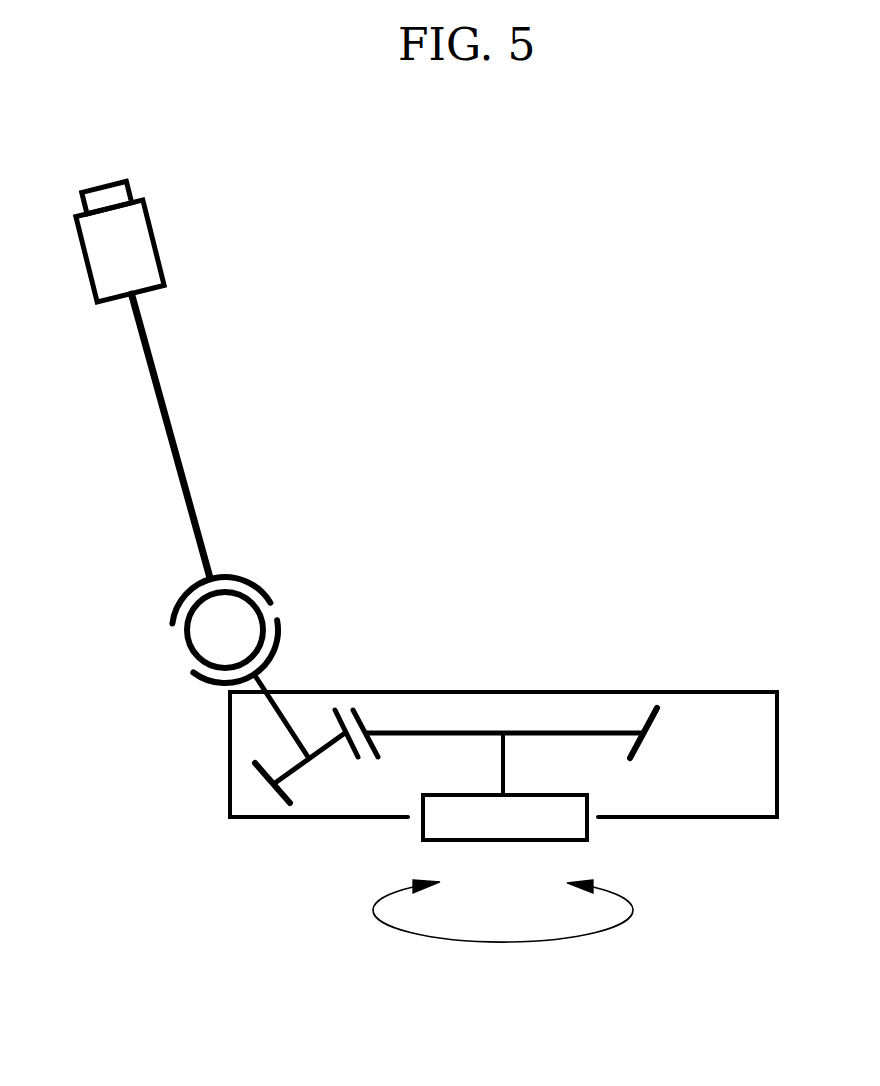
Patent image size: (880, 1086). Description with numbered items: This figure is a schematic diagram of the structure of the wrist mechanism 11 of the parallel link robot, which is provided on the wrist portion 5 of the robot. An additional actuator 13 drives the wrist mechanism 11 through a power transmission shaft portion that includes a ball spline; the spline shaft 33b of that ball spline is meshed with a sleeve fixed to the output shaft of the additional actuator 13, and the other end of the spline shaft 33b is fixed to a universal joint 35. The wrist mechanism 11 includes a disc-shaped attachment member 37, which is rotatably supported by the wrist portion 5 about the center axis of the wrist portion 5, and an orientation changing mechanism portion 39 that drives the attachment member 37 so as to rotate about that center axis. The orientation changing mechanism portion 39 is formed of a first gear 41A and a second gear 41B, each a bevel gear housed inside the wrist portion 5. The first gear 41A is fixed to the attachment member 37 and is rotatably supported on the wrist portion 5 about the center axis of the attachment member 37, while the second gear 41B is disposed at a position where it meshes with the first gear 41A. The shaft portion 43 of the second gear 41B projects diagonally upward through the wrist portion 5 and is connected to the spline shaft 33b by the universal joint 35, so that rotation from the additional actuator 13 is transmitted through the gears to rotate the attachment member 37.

The additional actuator 13 is at (153, 238).
The spline shaft 33b is at (165, 420).
The universal joint 35 is at (187, 640).
The wrist portion 5 is at (406, 670).
The shaft portion 43 is at (283, 710).
The second gear 41B is at (293, 786).
The orientation changing mechanism portion 39 is at (468, 710).
The first gear 41A is at (580, 732).
The attachment member 37 is at (507, 841).
The wrist mechanism 11 is at (531, 837).